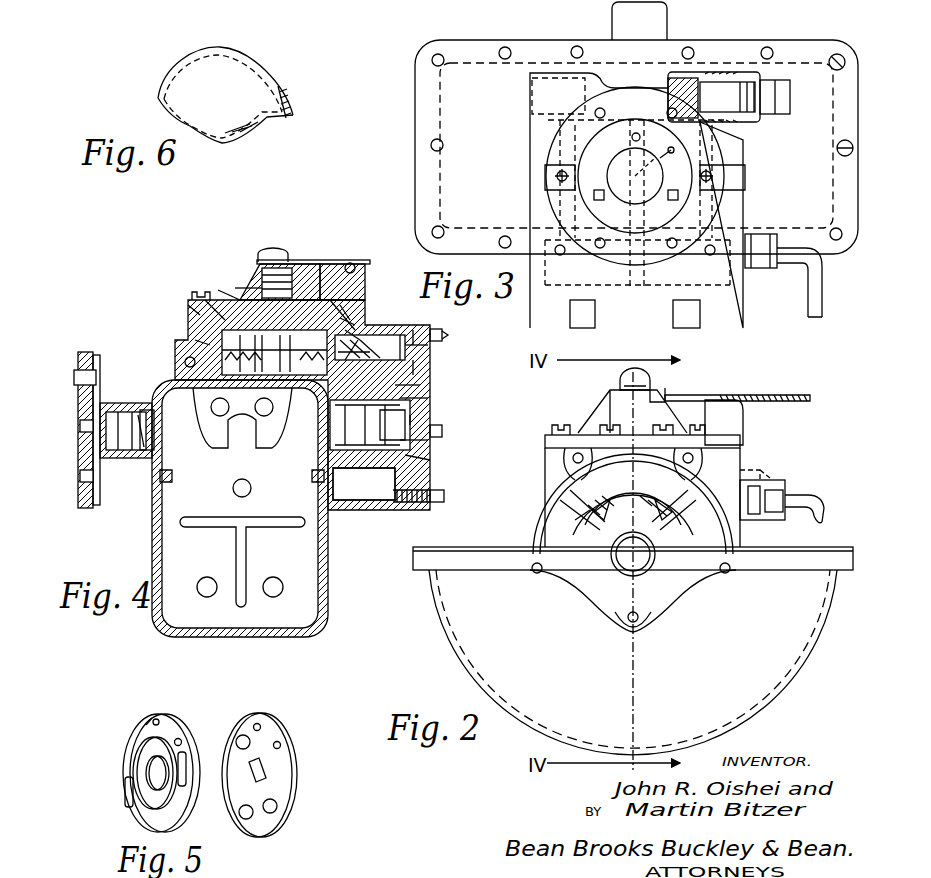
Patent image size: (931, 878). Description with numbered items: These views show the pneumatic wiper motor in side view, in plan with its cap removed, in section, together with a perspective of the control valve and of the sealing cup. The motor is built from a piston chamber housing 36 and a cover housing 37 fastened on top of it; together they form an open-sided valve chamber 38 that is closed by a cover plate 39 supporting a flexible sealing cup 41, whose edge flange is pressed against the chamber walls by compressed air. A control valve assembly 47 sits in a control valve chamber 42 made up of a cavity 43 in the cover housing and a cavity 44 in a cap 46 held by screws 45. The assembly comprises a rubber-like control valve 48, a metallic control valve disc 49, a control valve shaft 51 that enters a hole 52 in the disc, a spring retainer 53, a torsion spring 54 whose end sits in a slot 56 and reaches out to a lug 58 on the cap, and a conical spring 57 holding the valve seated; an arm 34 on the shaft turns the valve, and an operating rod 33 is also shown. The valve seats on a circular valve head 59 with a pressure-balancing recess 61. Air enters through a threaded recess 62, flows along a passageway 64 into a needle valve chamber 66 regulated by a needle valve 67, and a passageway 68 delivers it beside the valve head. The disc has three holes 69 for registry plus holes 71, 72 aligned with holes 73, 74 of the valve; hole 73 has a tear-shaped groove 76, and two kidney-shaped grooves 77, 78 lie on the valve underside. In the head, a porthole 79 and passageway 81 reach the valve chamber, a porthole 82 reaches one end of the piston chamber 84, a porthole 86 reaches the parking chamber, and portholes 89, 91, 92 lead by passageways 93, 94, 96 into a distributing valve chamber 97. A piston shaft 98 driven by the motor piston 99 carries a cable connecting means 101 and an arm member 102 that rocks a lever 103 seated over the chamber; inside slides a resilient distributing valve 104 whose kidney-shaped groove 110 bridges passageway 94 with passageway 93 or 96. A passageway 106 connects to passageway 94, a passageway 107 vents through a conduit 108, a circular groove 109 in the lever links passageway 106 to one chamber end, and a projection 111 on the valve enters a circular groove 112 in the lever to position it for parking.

In FIG. 2, the operating rod 33 is at (755, 398).
In FIG. 4, the arm 34 is at (300, 262).
In FIG. 2, the arm 34 is at (685, 383).
In FIG. 4, the piston chamber housing 36 is at (326, 585).
In FIG. 2, the piston chamber housing 36 is at (458, 655).
In FIG. 4, the cover housing 37 is at (190, 330).
In FIG. 2, the cover housing 37 is at (548, 470).
In FIG. 4, the valve chamber 38 is at (365, 505).
In FIG. 4, the cover plate 39 is at (425, 420).
In FIG. 6, the sealing cup 41 is at (258, 93).
In FIG. 4, the sealing cup 41 is at (420, 470).
In FIG. 4, the control valve chamber 42 is at (215, 300).
In FIG. 4, the cavity 43 is at (188, 310).
In FIG. 4, the cavity 44 is at (219, 290).
In FIG. 4, the screws 45 is at (195, 300).
In FIG. 2, the screws 45 is at (575, 430).
In FIG. 4, the cap 46 is at (232, 290).
In FIG. 2, the cap 46 is at (610, 410).
In FIG. 4, the control valve assembly 47 is at (238, 285).
In FIG. 5, the control valve 48 is at (175, 725).
In FIG. 4, the control valve 48 is at (345, 318).
In FIG. 5, the control valve disc 49 is at (282, 775).
In FIG. 4, the control valve disc 49 is at (345, 305).
In FIG. 4, the control valve shaft 51 is at (258, 275).
In FIG. 5, the hole 52 is at (262, 770).
In FIG. 4, the spring retainer 53 is at (308, 285).
In FIG. 4, the torsion spring 54 is at (262, 305).
In FIG. 4, the slot 56 is at (318, 290).
In FIG. 4, the conical spring 57 is at (342, 295).
In FIG. 4, the lug 58 is at (332, 295).
In FIG. 3, the lug 58 is at (585, 210).
In FIG. 4, the valve head 59 is at (352, 330).
In FIG. 3, the valve head 59 is at (572, 176).
In FIG. 4, the recess 61 is at (192, 355).
In FIG. 3, the recess 61 is at (625, 158).
In FIG. 3, the threaded recess 62 is at (532, 95).
In FIG. 3, the passageway 64 is at (672, 78).
In FIG. 3, the needle valve chamber 66 is at (715, 82).
In FIG. 3, the needle valve 67 is at (738, 88).
In FIG. 3, the passageway 68 is at (680, 158).
In FIG. 5, the holes 69 is at (244, 735).
In FIG. 5, the hole 71 is at (260, 725).
In FIG. 5, the hole 72 is at (281, 743).
In FIG. 5, the hole 73 is at (158, 718).
In FIG. 4, the hole 73 is at (195, 340).
In FIG. 5, the hole 74 is at (182, 742).
In FIG. 5, the tear-shaped groove 76 is at (148, 720).
In FIG. 5, the kidney-shaped groove 77 is at (125, 790).
In FIG. 5, the kidney-shaped groove 78 is at (184, 788).
In FIG. 3, the porthole 79 is at (636, 135).
In FIG. 4, the passageway 81 is at (150, 410).
In FIG. 3, the porthole 82 is at (559, 176).
In FIG. 2, the piston chamber 84 is at (462, 615).
In FIG. 3, the porthole 86 is at (690, 178).
In FIG. 3, the porthole 89 is at (598, 195).
In FIG. 3, the porthole 91 is at (672, 167).
In FIG. 3, the porthole 92 is at (685, 205).
In FIG. 2, the passageway 93 is at (590, 495).
In FIG. 2, the passageway 94 is at (575, 480).
In FIG. 2, the passageway 96 is at (680, 500).
In FIG. 2, the distributing valve chamber 97 is at (600, 522).
In FIG. 4, the piston shaft 98 is at (125, 405).
In FIG. 4, the motor piston 99 is at (300, 612).
In FIG. 4, the cable connecting means 101 is at (88, 352).
In FIG. 4, the arm member 102 is at (420, 430).
In FIG. 4, the lever 103 is at (420, 385).
In FIG. 4, the distributing valve 104 is at (448, 335).
In FIG. 4, the passageway 106 is at (420, 445).
In FIG. 2, the passageway 106 is at (748, 488).
In FIG. 2, the passageway 107 is at (822, 520).
In FIG. 3, the conduit 108 is at (806, 290).
In FIG. 2, the conduit 108 is at (798, 505).
In FIG. 4, the circular groove 109 is at (420, 400).
In FIG. 4, the kidney-shaped groove 110 is at (432, 348).
In FIG. 4, the projection 111 is at (425, 360).
In FIG. 4, the circular groove 112 is at (425, 370).